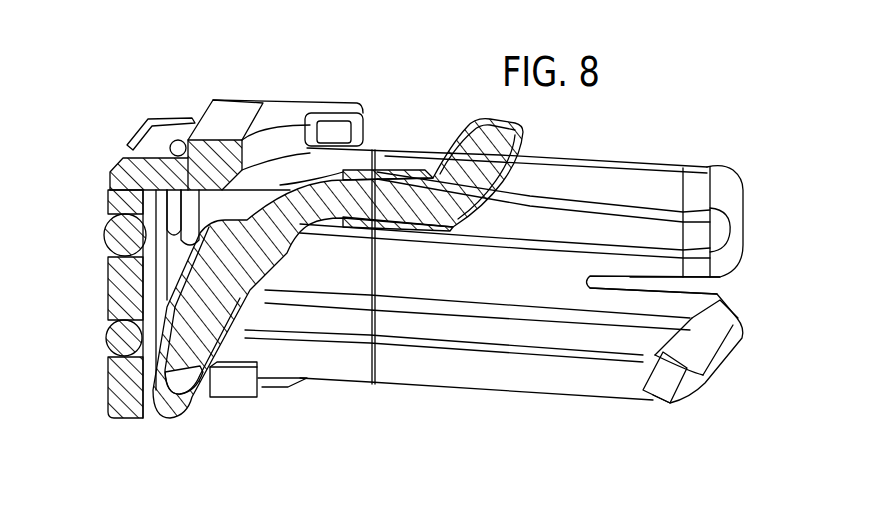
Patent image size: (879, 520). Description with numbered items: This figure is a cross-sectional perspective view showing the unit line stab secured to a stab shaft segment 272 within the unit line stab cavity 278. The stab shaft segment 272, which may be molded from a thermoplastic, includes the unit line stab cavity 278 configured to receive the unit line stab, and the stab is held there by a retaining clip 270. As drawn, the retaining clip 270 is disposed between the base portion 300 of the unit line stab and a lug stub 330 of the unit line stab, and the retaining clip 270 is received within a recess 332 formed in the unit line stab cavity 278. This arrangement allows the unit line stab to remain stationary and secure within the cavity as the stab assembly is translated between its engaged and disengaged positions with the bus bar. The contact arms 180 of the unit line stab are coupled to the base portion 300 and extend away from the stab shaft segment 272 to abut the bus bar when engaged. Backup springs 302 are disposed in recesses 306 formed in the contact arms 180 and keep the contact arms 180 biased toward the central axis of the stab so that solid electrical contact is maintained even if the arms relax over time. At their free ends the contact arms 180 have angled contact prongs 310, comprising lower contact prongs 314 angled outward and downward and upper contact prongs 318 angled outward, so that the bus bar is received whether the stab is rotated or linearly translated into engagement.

The contact arms 180 is at (447, 277).
The retaining clip 270 is at (183, 130).
The stab shaft segment 272 is at (128, 158).
The unit line stab cavity 278 is at (273, 173).
The base portion 300 is at (163, 265).
The backup springs 302 is at (103, 243).
The recesses 306 is at (635, 232).
The contact prongs 310 is at (735, 243).
The lower contact prongs 314 is at (700, 388).
The upper contact prongs 318 is at (710, 163).
The lug stub 330 is at (245, 360).
The recess 332 is at (200, 130).